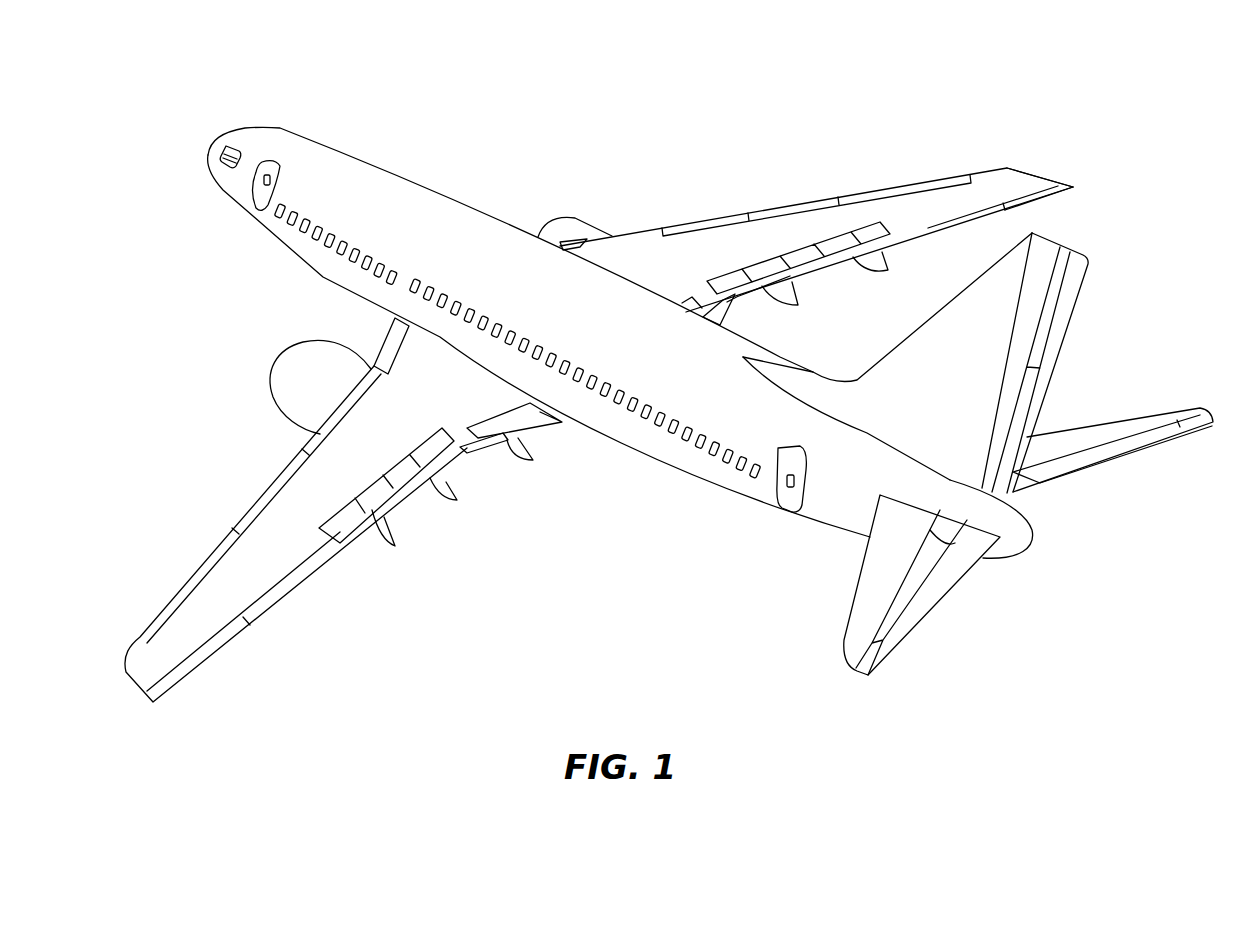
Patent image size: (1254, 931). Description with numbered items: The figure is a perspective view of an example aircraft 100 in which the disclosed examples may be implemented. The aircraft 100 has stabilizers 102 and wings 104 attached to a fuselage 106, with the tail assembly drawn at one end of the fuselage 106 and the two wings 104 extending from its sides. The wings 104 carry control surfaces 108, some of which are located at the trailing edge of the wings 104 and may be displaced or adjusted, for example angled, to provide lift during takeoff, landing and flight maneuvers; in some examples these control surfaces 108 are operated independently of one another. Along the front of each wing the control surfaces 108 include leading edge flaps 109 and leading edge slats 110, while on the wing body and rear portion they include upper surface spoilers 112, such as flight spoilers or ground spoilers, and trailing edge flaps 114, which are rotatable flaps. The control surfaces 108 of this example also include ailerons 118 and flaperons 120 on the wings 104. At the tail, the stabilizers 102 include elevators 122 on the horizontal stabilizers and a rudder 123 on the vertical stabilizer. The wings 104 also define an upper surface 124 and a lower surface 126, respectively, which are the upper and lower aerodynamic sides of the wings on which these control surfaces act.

The aircraft 100 is at (952, 65).
The stabilizers 102 is at (943, 333).
The wings 104 is at (964, 102).
The fuselage 106 is at (367, 167).
The control surfaces 108 is at (892, 212).
The leading edge flaps 109 is at (393, 352).
The leading edge slats 110 is at (793, 208).
The upper surface spoilers 112 is at (872, 237).
The trailing edge flaps 114 is at (803, 280).
The ailerons 118 is at (943, 227).
The flaperons 120 is at (750, 307).
The elevators 122 is at (1103, 473).
The rudder 123 is at (1058, 323).
The upper surface 124 is at (1018, 178).
The lower surface 126 is at (1057, 197).